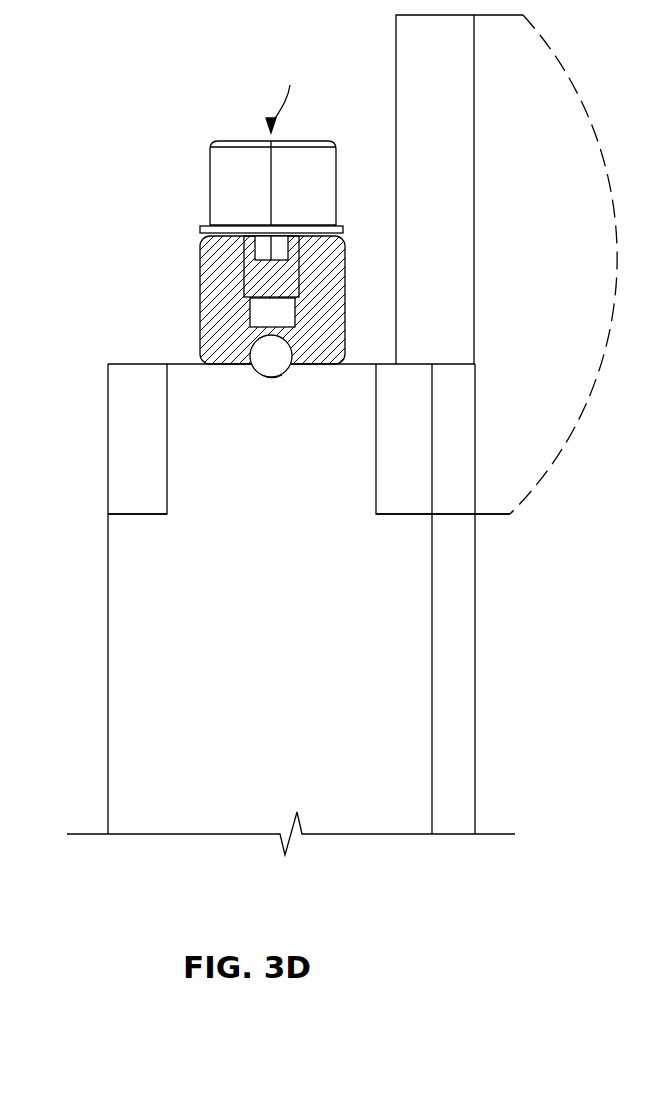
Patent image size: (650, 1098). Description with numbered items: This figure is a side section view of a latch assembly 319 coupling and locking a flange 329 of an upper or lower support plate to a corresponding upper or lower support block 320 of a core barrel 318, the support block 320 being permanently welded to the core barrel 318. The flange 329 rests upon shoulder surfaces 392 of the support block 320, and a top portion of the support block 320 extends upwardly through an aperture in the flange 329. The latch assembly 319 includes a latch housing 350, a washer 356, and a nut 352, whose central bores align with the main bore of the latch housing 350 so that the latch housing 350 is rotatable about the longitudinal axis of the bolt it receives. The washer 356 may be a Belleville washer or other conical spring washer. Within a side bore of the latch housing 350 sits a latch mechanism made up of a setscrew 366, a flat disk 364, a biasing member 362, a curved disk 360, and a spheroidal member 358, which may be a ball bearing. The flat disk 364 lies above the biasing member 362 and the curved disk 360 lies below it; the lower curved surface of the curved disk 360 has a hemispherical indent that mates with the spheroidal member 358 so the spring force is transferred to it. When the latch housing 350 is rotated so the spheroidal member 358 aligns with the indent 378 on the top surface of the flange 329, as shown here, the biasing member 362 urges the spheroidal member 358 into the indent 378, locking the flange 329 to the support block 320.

The core barrel 318 is at (475, 707).
The latch assembly 319 is at (291, 95).
The support block 320 is at (108, 703).
The flange 329 is at (108, 503).
The latch housing 350 is at (345, 287).
The nut 352 is at (336, 157).
The washer 356 is at (345, 229).
The spheroidal member 358 is at (266, 365).
The curved disk 360 is at (250, 350).
The biasing member 362 is at (250, 313).
The flat disk 364 is at (244, 278).
The setscrew 366 is at (259, 237).
The indent 378 is at (272, 378).
The shoulder surfaces 392 is at (137, 514).